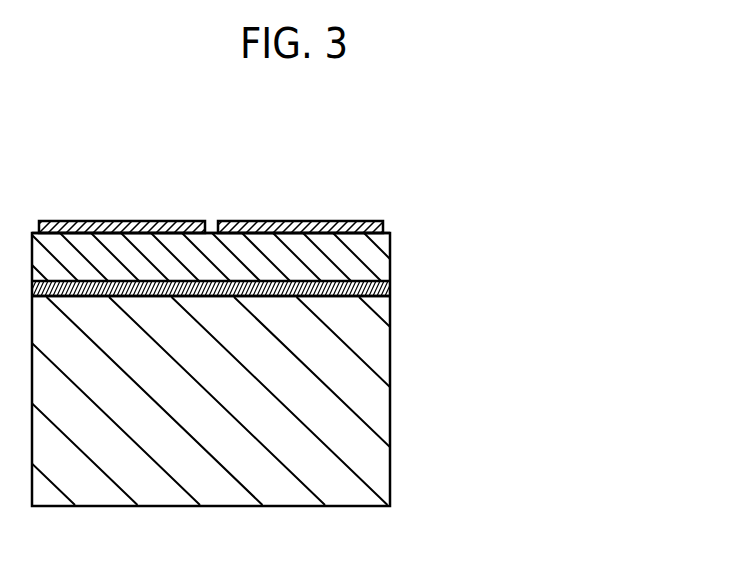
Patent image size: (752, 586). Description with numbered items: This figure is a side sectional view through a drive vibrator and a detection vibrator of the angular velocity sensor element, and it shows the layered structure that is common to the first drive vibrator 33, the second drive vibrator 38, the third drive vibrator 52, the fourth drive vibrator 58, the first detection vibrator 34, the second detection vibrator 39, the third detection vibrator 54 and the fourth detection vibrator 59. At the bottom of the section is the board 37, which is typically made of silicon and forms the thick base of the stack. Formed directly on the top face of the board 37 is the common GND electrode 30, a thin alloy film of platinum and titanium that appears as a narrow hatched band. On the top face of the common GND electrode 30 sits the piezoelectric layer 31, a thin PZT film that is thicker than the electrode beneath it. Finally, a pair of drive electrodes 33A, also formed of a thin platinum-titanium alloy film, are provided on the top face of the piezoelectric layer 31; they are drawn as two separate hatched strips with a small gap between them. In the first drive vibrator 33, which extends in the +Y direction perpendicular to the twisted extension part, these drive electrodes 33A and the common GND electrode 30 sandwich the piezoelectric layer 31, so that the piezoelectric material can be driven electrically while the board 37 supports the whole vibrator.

The drive electrodes 33A is at (327, 220).
The piezoelectric layer 31 is at (373, 253).
The common GND electrode 30 is at (390, 290).
The board 37 is at (380, 368).
The first drive vibrator 33 is at (362, 405).
The second drive vibrator 38 is at (211, 369).
The third drive vibrator 52 is at (211, 369).
The fourth drive vibrator 58 is at (211, 369).
The first detection vibrator 34 is at (211, 369).
The second detection vibrator 39 is at (211, 369).
The third detection vibrator 54 is at (211, 369).
The fourth detection vibrator 59 is at (211, 369).